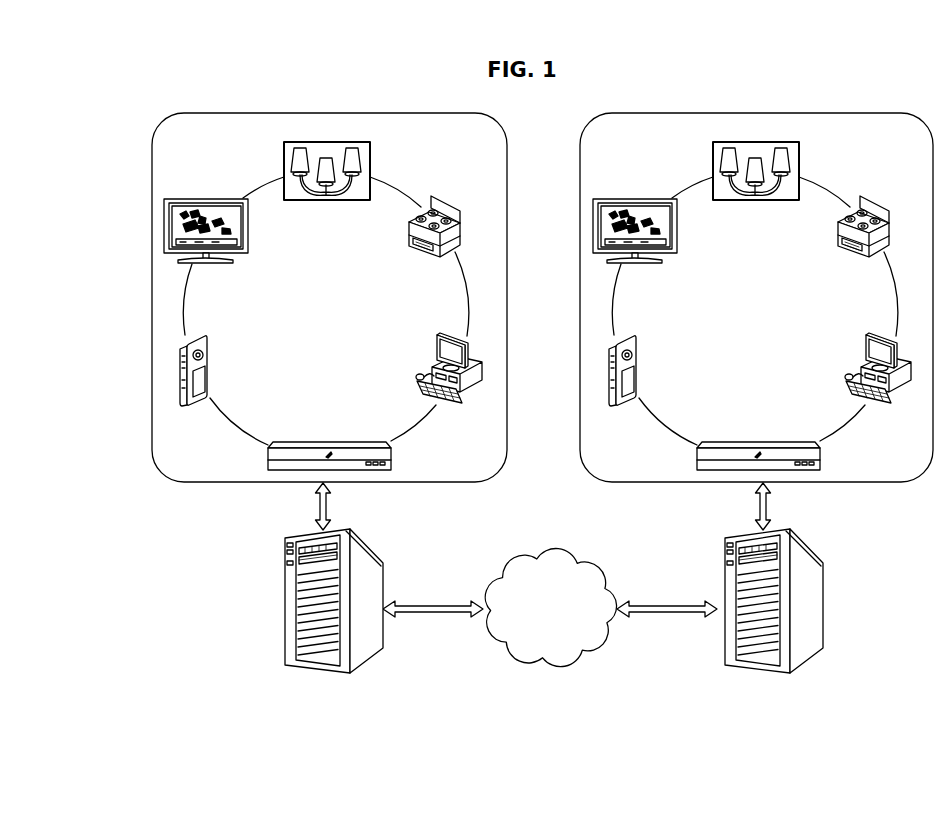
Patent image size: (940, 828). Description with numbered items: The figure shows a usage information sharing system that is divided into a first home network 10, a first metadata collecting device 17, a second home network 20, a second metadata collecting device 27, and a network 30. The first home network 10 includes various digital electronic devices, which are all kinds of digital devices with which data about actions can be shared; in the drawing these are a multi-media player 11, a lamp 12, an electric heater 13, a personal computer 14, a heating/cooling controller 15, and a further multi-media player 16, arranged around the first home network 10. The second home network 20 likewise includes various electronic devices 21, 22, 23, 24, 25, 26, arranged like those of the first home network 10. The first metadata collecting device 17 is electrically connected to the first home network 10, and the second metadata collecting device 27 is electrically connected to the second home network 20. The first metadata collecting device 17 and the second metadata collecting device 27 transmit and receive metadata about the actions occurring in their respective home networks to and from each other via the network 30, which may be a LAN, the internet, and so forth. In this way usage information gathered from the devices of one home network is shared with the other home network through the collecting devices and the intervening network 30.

The first home network 10 is at (508, 158).
The multi-media player 11 is at (207, 200).
The lamp 12 is at (337, 142).
The electric heater 13 is at (447, 201).
The personal computer 14 is at (466, 356).
The heating/cooling controller 15 is at (323, 443).
The multi-media player 16 is at (203, 335).
The first metadata collecting device 17 is at (285, 570).
The second home network 20 is at (580, 187).
The electronic device 21 is at (635, 215).
The electronic device 22 is at (756, 160).
The electronic device 23 is at (871, 215).
The electronic device 24 is at (886, 367).
The electronic device 25 is at (758, 443).
The electronic device 26 is at (632, 355).
The second metadata collecting device 27 is at (756, 601).
The network 30 is at (598, 557).